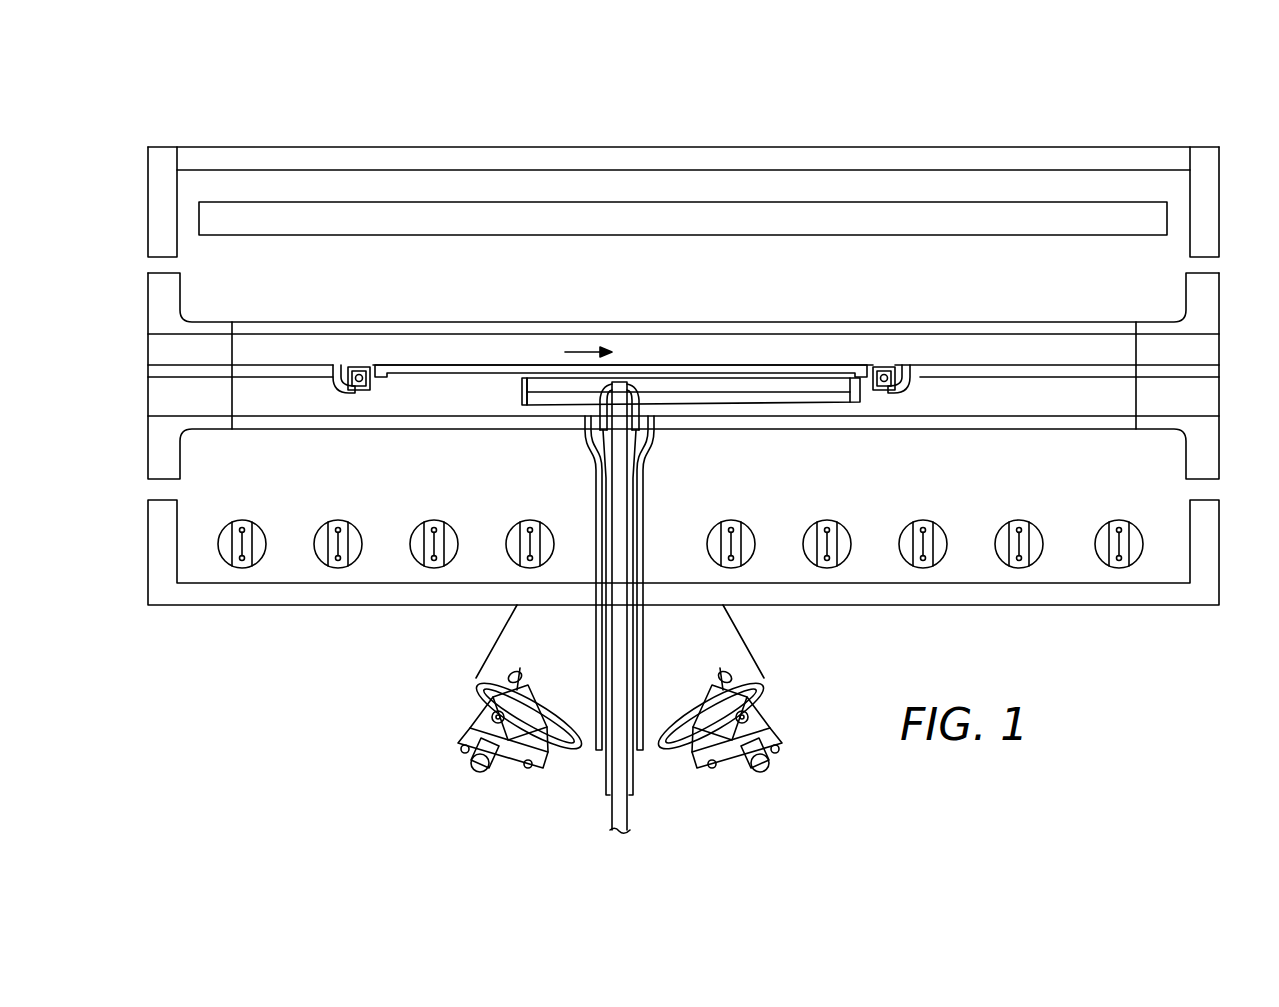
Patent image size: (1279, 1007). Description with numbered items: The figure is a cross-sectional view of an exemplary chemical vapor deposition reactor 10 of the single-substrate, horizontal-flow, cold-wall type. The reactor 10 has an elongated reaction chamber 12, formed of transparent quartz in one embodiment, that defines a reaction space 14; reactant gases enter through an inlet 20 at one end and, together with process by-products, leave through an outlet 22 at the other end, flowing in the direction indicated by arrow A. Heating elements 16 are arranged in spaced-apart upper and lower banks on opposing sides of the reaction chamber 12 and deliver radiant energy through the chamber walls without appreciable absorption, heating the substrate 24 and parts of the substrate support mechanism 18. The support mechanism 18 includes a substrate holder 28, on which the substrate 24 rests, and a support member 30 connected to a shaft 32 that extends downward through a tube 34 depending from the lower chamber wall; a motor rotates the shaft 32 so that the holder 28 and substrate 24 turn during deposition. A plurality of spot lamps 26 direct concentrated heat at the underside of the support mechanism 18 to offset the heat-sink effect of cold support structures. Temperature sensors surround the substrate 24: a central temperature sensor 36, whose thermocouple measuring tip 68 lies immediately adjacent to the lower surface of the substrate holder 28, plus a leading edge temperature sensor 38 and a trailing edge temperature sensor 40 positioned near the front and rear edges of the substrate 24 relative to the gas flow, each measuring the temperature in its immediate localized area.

The chemical vapor deposition reactor 10 is at (188, 112).
The reaction chamber 12 is at (158, 306).
The reaction space 14 is at (307, 344).
The heating elements 16 is at (634, 228).
The substrate support mechanism 18 is at (520, 390).
The inlet 20 is at (148, 402).
The outlet 22 is at (1219, 352).
The substrate 24 is at (442, 364).
The spot lamps 26 is at (477, 698).
The substrate holder 28 is at (396, 378).
The support member 30 is at (848, 402).
The shaft 32 is at (628, 474).
The tube 34 is at (640, 510).
The central temperature sensor 36 is at (628, 386).
The leading edge temperature sensor 38 is at (362, 367).
The trailing edge temperature sensor 40 is at (888, 372).
The measuring tip 68 is at (612, 384).